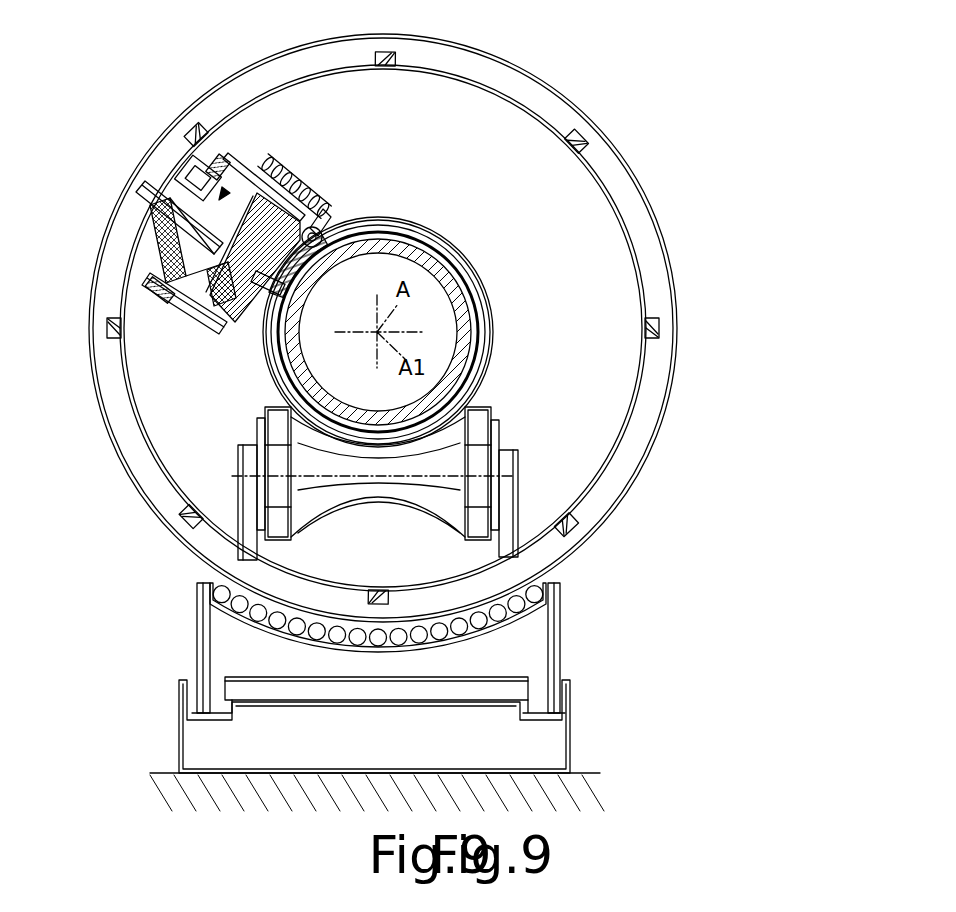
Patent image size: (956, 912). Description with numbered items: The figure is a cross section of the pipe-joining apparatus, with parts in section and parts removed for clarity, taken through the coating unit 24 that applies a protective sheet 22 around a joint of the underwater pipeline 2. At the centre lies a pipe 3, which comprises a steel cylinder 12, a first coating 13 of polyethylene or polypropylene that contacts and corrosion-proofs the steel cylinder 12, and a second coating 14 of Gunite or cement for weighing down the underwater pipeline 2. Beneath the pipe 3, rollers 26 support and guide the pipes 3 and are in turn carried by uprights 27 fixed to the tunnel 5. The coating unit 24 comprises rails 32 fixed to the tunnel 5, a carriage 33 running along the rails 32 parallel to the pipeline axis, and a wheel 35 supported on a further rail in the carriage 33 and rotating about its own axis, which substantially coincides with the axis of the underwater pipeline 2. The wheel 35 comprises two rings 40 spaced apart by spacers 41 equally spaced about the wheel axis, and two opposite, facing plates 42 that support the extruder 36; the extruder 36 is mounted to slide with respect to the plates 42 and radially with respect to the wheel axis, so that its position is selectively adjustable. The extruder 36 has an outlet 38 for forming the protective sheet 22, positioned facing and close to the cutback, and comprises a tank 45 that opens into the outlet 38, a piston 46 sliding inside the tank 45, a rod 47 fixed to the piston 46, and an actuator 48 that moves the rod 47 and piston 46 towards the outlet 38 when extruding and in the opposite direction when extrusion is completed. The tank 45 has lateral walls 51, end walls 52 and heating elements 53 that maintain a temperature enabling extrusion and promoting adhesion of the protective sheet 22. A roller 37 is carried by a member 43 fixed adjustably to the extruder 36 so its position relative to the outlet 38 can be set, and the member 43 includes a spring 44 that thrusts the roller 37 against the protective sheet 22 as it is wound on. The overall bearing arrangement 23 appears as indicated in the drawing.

The underwater pipeline 2 is at (556, 272).
The pipe 3 is at (525, 350).
The tunnel 5 is at (611, 695).
The steel cylinder 12 is at (466, 312).
The first coating 13 is at (462, 280).
The second coating 14 is at (455, 255).
The protective sheet 22 is at (385, 228).
The bearing arrangement 23 is at (716, 168).
The coating unit 24 is at (636, 76).
The rollers 26 is at (482, 420).
The uprights 27 is at (250, 470).
The rails 32 is at (555, 745).
The carriage 33 is at (545, 655).
The wheel 35 is at (698, 228).
The extruder 36 is at (206, 348).
The roller 37 is at (320, 247).
The outlet 38 is at (255, 328).
The rings 40 is at (640, 452).
The spacers 41 is at (390, 57).
The plates 42 is at (152, 226).
The member 43 is at (330, 220).
The spring 44 is at (297, 215).
The tank 45 is at (245, 160).
The piston 46 is at (187, 292).
The rod 47 is at (145, 185).
The actuator 48 is at (190, 168).
The lateral walls 51 is at (220, 163).
The end walls 52 is at (330, 233).
The heating elements 53 is at (258, 160).